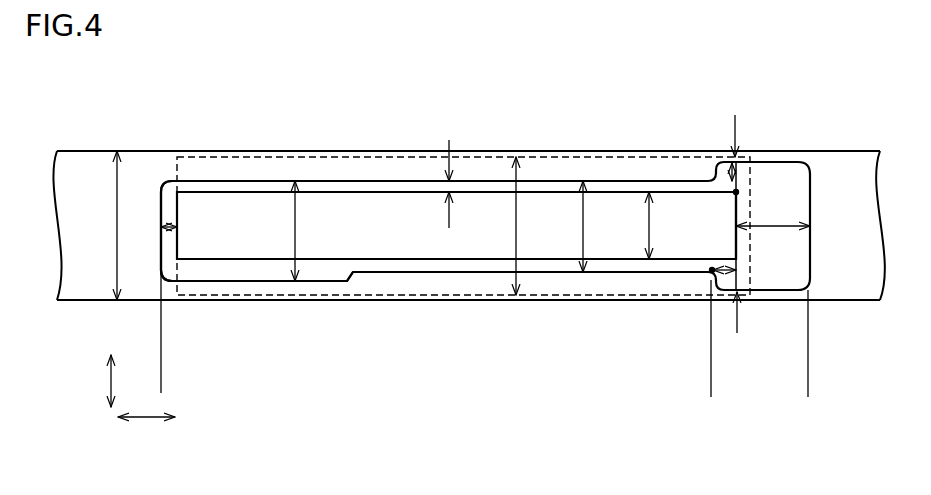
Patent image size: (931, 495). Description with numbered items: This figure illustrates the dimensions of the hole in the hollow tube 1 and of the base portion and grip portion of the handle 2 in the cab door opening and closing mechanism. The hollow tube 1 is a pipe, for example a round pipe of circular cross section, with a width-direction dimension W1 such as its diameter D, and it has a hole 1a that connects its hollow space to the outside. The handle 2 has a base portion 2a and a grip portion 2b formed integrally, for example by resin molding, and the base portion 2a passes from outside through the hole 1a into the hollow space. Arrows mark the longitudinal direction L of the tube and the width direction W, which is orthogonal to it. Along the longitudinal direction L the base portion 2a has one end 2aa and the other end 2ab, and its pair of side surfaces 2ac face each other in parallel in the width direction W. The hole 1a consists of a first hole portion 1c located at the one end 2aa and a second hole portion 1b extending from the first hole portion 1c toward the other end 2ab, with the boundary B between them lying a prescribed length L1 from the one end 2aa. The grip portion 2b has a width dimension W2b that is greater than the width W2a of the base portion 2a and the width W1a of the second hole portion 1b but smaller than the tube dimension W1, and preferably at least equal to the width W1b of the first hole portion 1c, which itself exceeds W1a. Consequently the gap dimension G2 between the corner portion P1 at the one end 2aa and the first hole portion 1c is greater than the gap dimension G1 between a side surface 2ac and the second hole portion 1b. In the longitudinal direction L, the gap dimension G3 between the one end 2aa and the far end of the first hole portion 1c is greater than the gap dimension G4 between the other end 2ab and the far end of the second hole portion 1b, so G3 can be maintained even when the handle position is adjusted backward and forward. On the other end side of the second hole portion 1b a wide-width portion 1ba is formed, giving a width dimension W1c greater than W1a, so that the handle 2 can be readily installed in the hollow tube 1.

The hollow tube 1 is at (348, 151).
The hole 1a is at (808, 437).
The second hole portion 1b is at (711, 382).
The first hole portion 1c is at (808, 382).
The wide-width portion 1ba is at (262, 283).
The handle 2 is at (277, 111).
The base portion 2a is at (222, 212).
The one end 2aa is at (738, 246).
The other end 2ab is at (171, 283).
The side surfaces 2ac is at (399, 181).
The grip portion 2b is at (258, 157).
The boundary B is at (710, 270).
The corner portion P1 is at (740, 191).
The dimension of gap G1 is at (430, 184).
The dimension of gap G2 is at (724, 166).
The dimension of gap G3 is at (773, 215).
The dimension of gap G4 is at (167, 225).
The dimension of hollow tube W1 is at (97, 225).
The diameter D is at (92, 243).
The dimension of second hole portion W1a is at (560, 226).
The dimension of first hole portion W1b is at (761, 134).
The dimension of second hole portion with wide-width portion W1c is at (269, 231).
The dimension of base portion W2a is at (624, 225).
The dimension of grip portion W2b is at (492, 226).
The prescribed length L1 is at (727, 272).
The width direction W is at (96, 381).
The longitudinal direction L is at (146, 435).